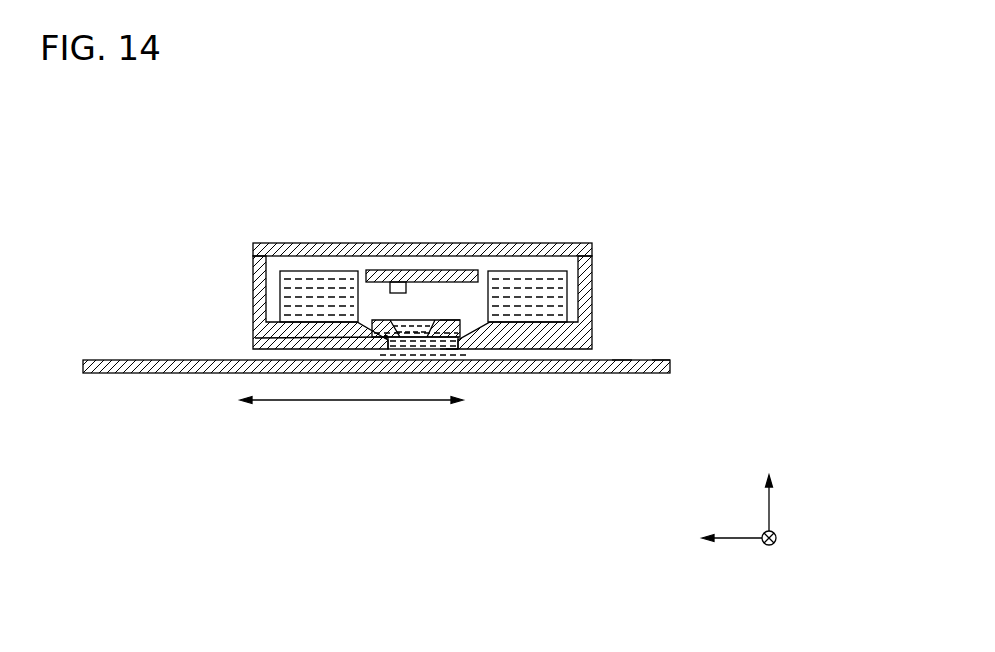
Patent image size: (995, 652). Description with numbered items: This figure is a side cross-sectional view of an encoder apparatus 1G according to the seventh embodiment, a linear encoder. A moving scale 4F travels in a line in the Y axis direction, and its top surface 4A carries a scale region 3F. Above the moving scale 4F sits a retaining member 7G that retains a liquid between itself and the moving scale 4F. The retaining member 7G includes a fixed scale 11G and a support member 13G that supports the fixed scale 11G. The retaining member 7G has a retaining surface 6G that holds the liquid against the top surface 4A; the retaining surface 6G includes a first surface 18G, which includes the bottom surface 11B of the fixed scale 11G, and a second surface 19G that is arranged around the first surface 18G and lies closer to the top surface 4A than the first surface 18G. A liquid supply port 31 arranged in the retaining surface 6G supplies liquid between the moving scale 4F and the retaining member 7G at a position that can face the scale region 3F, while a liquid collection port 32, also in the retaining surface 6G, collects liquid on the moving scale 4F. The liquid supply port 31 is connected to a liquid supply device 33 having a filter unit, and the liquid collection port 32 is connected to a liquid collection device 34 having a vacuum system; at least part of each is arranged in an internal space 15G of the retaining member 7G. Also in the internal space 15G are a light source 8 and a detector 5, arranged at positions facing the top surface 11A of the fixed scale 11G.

The encoder apparatus 1G is at (657, 167).
The retaining member 7G is at (249, 253).
The internal space 15G is at (337, 265).
The support member 13G is at (253, 312).
The liquid supply device 33 is at (302, 270).
The liquid collection device 34 is at (543, 270).
The light source 8 is at (421, 270).
The detector 5 is at (455, 286).
The retaining surface 6G is at (430, 478).
The first surface 18G is at (403, 337).
The second surface 19G is at (383, 349).
The fixed scale 11G is at (417, 347).
The top surface of the fixed scale 11A is at (452, 321).
The bottom surface of the fixed scale 11B is at (447, 295).
The liquid supply port 31 is at (255, 338).
The liquid collection port 32 is at (452, 349).
The moving scale 4F is at (672, 364).
The scale region 3F is at (622, 358).
The top surface 4A is at (662, 358).